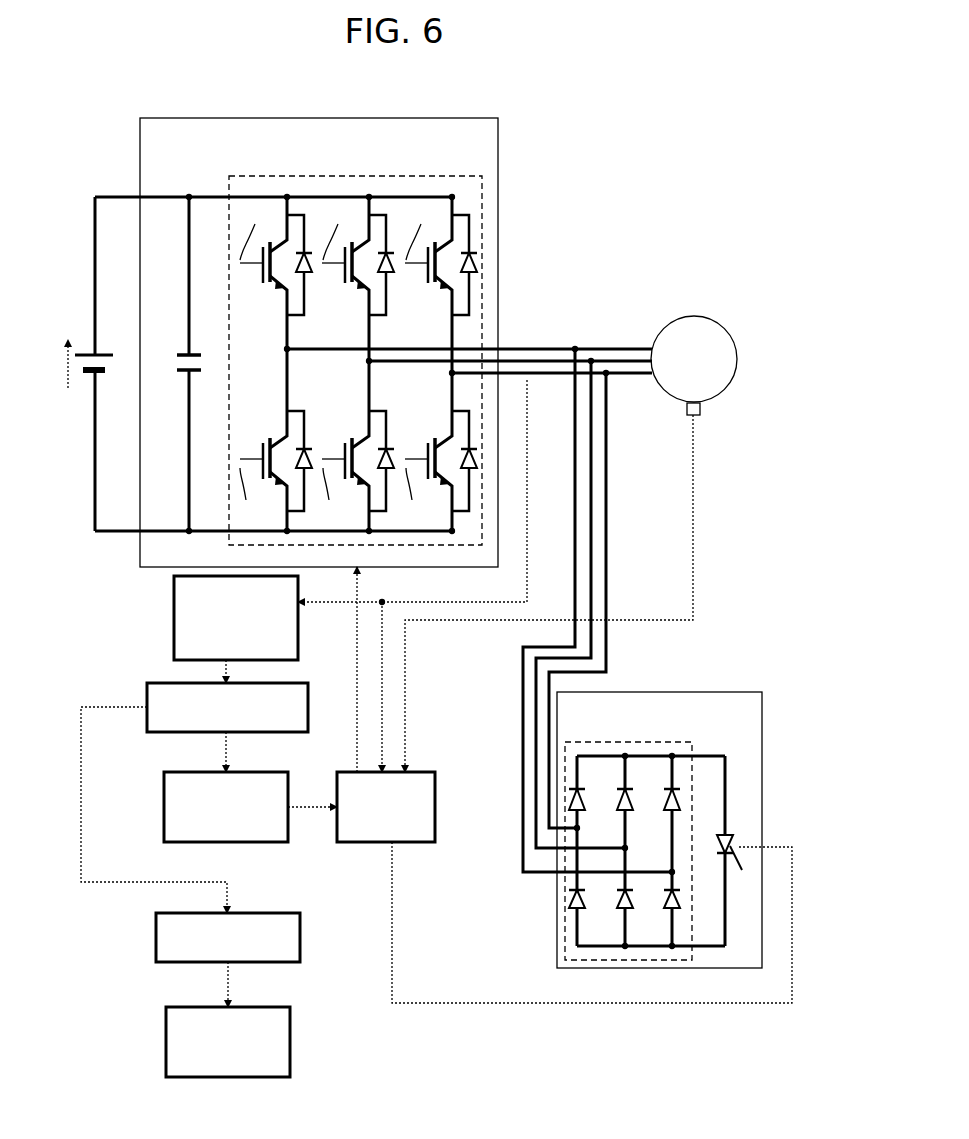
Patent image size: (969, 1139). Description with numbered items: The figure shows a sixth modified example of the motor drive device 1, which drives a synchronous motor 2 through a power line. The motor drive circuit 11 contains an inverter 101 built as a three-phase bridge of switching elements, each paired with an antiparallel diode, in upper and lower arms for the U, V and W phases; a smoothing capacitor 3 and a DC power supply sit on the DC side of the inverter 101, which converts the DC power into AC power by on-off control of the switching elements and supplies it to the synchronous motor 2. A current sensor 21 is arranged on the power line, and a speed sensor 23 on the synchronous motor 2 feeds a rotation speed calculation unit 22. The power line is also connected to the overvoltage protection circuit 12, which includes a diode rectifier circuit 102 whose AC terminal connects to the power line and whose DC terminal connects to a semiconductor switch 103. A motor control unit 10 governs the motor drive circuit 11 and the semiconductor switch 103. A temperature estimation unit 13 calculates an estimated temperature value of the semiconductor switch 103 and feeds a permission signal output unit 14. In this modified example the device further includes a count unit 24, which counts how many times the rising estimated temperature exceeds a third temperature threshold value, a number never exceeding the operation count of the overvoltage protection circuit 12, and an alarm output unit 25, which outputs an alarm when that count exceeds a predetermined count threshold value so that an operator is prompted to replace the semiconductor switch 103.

The motor drive device 1 is at (627, 144).
The synchronous motor 2 is at (690, 316).
The smoothing capacitor 3 is at (185, 350).
The motor control unit 10 is at (418, 772).
The motor drive circuit 11 is at (308, 118).
The overvoltage protection circuit 12 is at (683, 692).
The temperature estimation unit 13 is at (163, 683).
The permission signal output unit 14 is at (175, 772).
The current sensor 21 is at (520, 348).
The rotation speed calculation unit 22 is at (174, 608).
The speed sensor 23 is at (680, 418).
The count unit 24 is at (280, 913).
The alarm output unit 25 is at (170, 1007).
The inverter 101 is at (483, 178).
The diode rectifier circuit 102 is at (555, 925).
The semiconductor switch 103 is at (745, 832).